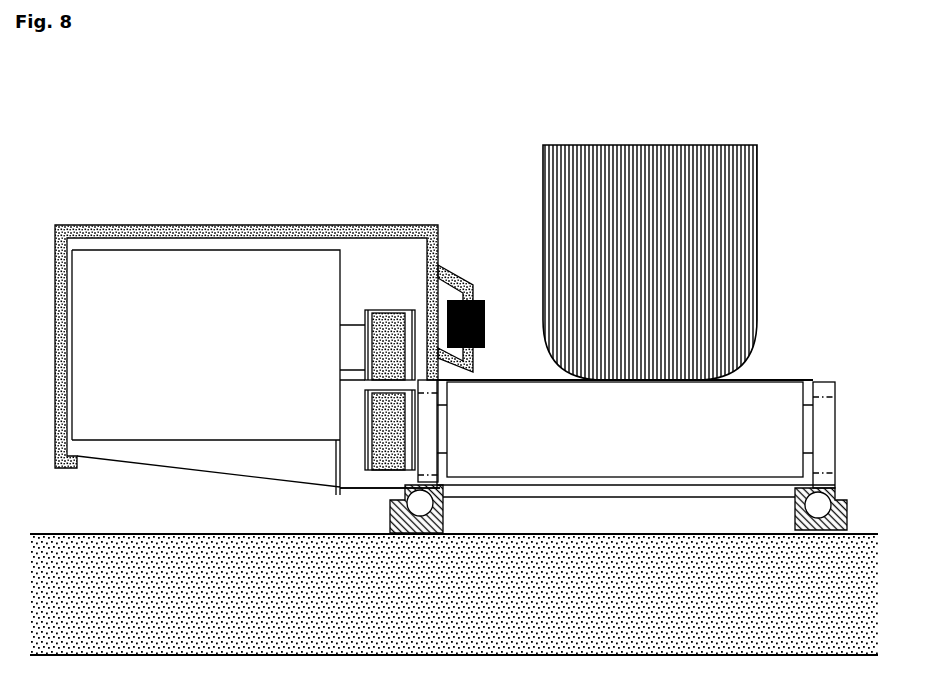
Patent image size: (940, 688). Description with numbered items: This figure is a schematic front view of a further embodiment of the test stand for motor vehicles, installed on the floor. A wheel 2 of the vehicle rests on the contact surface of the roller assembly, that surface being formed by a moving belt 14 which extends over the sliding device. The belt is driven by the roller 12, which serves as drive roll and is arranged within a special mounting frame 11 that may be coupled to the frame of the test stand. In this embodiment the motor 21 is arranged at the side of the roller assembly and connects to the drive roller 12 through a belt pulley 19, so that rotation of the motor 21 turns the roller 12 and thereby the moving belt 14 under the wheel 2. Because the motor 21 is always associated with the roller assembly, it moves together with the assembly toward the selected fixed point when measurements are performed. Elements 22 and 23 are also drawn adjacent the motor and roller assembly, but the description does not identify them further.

The wheel 2 is at (650, 262).
The mounting frame 11 is at (812, 385).
The roller 12 is at (765, 423).
The moving belt 14 is at (745, 380).
The belt pulley 19 is at (370, 488).
The motor 21 is at (135, 257).
The dosing unit housing 22 is at (365, 313).
The dosing element 23 is at (385, 313).